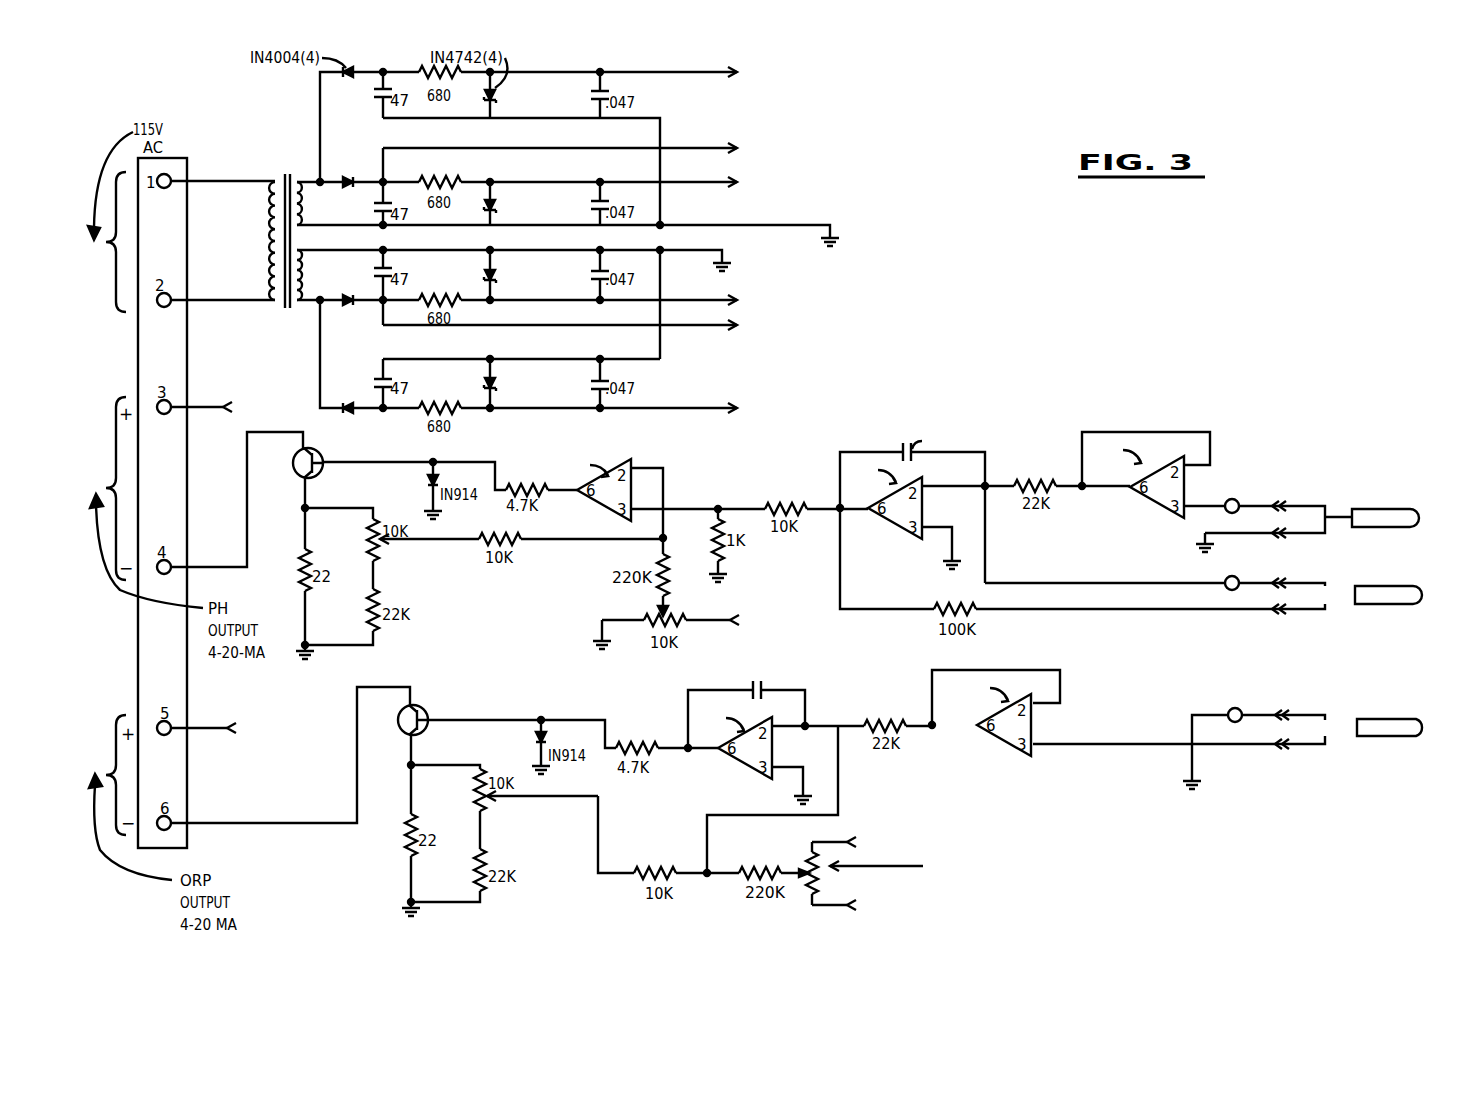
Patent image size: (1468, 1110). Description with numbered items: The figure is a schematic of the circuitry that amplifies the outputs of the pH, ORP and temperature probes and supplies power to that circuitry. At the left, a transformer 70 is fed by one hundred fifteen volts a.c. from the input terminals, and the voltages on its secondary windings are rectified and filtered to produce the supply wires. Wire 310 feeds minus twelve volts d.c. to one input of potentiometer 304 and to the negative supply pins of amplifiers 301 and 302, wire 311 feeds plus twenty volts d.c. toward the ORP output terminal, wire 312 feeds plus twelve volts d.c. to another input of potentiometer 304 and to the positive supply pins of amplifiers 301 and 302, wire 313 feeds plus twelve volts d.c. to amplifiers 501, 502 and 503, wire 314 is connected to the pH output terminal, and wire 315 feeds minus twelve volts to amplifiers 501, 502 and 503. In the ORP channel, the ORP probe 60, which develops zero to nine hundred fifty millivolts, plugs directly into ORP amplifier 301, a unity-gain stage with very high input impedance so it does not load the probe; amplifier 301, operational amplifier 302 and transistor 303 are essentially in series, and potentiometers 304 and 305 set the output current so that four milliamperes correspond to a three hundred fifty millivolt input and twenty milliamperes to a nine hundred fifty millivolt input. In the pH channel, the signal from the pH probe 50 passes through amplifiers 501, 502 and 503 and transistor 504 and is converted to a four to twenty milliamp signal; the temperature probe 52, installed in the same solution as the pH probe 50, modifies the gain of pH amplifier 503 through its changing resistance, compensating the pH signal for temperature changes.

The transformer 70 is at (268, 302).
The wire 310 is at (657, 70).
The wire 311 is at (713, 147).
The wire 312 is at (715, 178).
The wire 313 is at (704, 291).
The wire 314 is at (682, 330).
The wire 315 is at (712, 404).
The amplifier 501 is at (1148, 500).
The amplifier 502 is at (893, 530).
The pH amplifier 503 is at (636, 490).
The transistor 504 is at (324, 458).
The ORP amplifier 301 is at (1036, 722).
The operational amplifier 302 is at (735, 764).
The transistor 303 is at (428, 708).
The potentiometer 304 is at (891, 873).
The potentiometer 305 is at (493, 822).
The pH probe 50 is at (1399, 508).
The temperature probe 52 is at (1398, 607).
The ORP probe 60 is at (1400, 738).